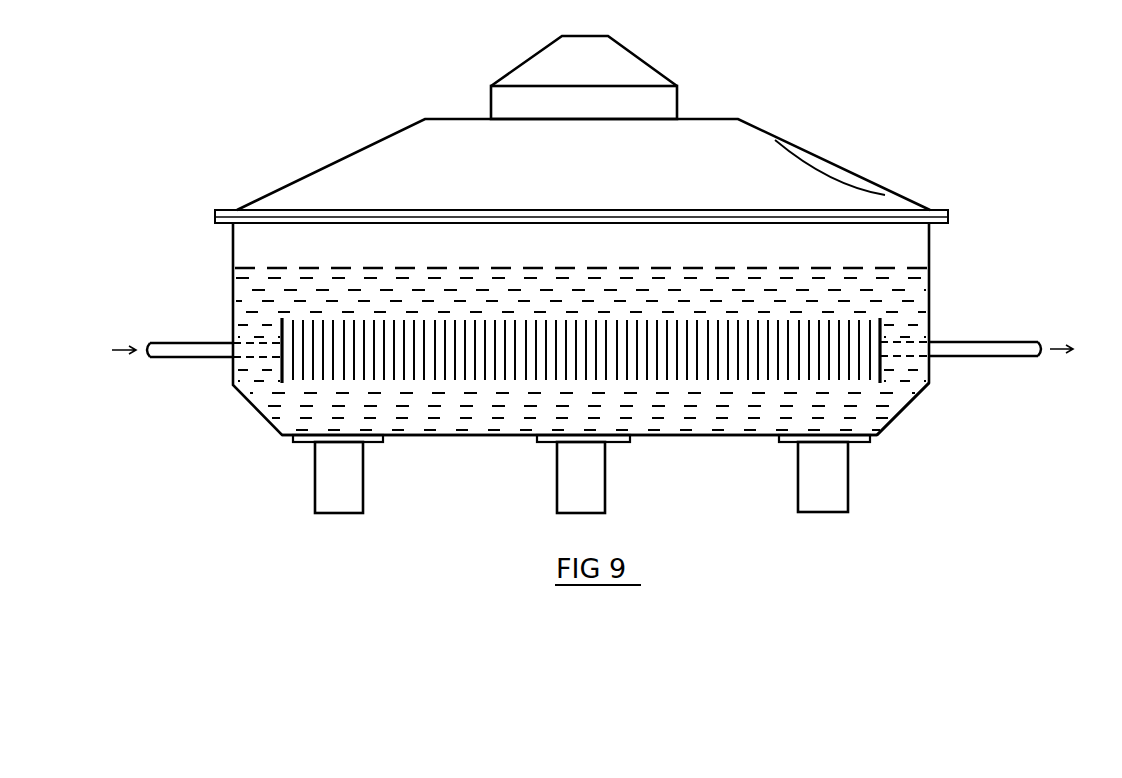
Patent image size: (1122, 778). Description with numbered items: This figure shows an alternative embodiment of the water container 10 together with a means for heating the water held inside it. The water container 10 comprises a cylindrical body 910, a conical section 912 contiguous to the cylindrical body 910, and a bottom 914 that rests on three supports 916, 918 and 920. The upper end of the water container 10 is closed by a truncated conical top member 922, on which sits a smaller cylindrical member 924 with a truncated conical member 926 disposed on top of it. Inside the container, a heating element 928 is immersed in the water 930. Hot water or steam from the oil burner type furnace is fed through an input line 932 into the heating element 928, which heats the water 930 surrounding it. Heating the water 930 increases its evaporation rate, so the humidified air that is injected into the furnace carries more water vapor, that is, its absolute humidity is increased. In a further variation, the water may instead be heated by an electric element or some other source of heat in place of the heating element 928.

The water container 10 is at (913, 154).
The cylindrical body 910 is at (930, 280).
The conical section 912 is at (917, 397).
The bottom 914 is at (678, 437).
The support 916 is at (362, 493).
The support 918 is at (605, 495).
The support 920 is at (848, 500).
The truncated conical top member 922 is at (913, 207).
The smaller cylindrical member 924 is at (678, 101).
The truncated conical member 926 is at (660, 76).
The heating element 928 is at (868, 380).
The water 930 is at (247, 270).
The input line 932 is at (180, 340).